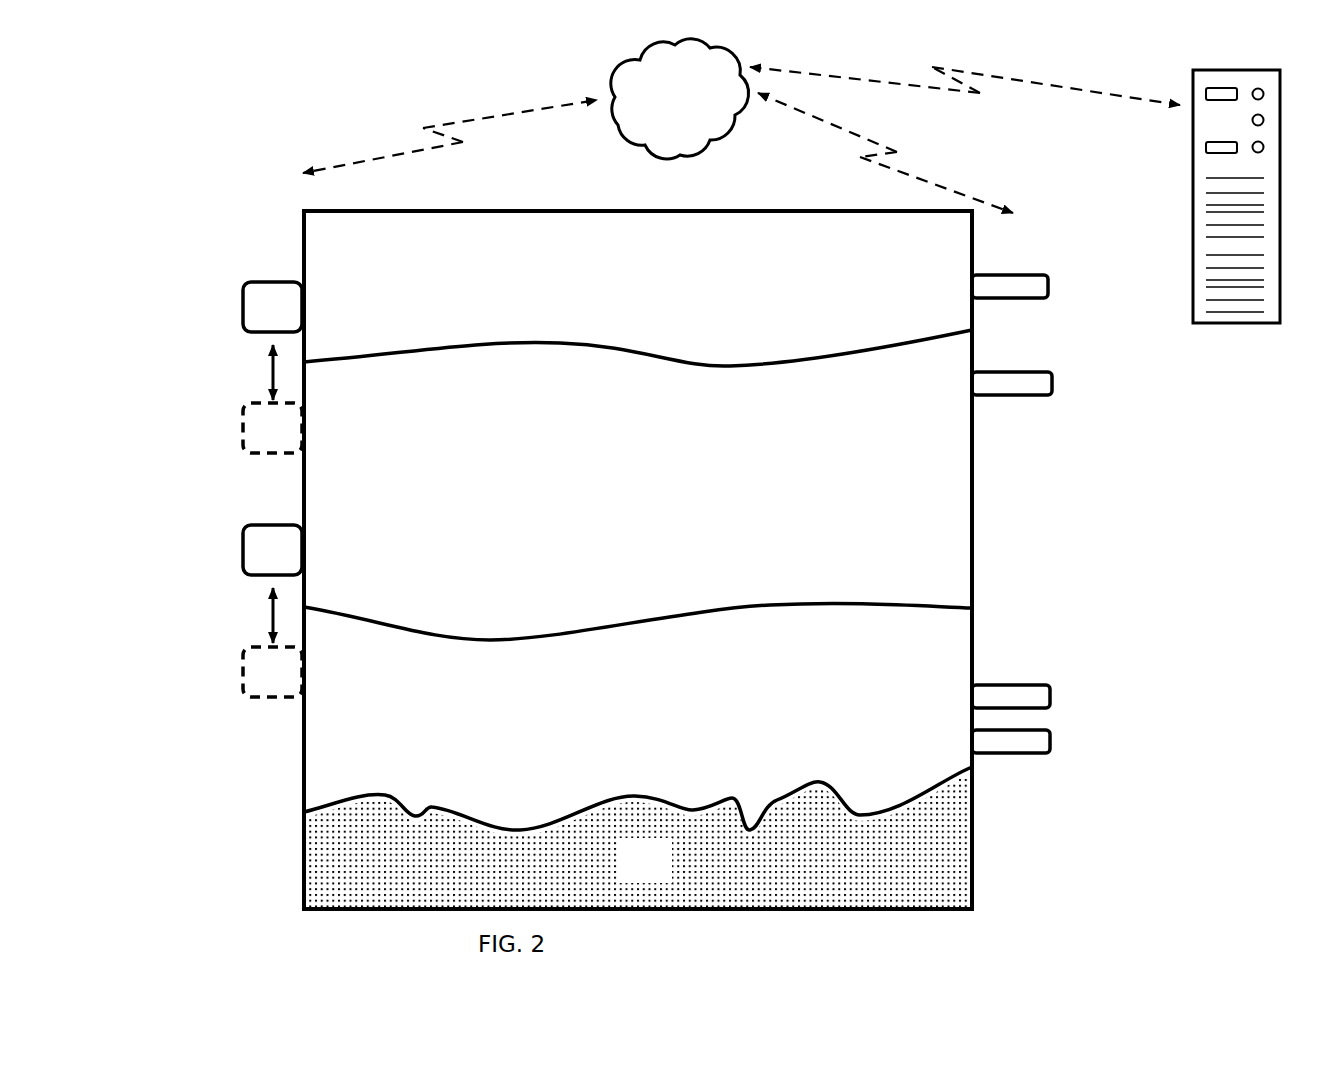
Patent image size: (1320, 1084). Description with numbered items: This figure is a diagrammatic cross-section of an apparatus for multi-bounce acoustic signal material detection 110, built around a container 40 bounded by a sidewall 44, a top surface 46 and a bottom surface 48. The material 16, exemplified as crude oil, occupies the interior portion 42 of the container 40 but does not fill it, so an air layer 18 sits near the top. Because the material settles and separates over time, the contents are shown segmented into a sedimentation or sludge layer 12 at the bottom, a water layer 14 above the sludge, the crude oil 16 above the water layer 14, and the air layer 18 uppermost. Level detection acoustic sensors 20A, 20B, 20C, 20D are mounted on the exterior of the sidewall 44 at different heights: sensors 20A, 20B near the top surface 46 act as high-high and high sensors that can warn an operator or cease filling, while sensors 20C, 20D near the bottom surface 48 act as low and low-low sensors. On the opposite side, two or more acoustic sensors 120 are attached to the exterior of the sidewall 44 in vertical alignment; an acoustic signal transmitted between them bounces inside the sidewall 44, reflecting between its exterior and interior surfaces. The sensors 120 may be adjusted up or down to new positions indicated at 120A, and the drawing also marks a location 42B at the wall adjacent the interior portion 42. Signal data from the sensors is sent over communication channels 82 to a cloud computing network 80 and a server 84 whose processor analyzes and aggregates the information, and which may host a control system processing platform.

The apparatus for multi-bounce acoustic signal material detection 110 is at (245, 178).
The cloud computing network 80 is at (696, 111).
The communication channels 82 is at (447, 123).
The container 40 is at (1176, 241).
The server 84 is at (1232, 327).
The top surface 46 is at (747, 208).
The sidewall 44 is at (973, 518).
The bottom surface 48 is at (713, 910).
The air layer 18 is at (665, 274).
The material 16 is at (643, 492).
The water layer 14 is at (642, 717).
The sedimentation or sludge layer 12 is at (652, 874).
The acoustic sensors 120 is at (235, 312).
The new positions of acoustic sensors 120A is at (242, 440).
The acoustic sensor 20A is at (1048, 287).
The acoustic sensor 20B is at (1052, 383).
The acoustic sensor 20C is at (1050, 695).
The acoustic sensor 20D is at (1050, 740).
The tank wall region 42B is at (297, 722).
The interior portion 42 is at (352, 758).